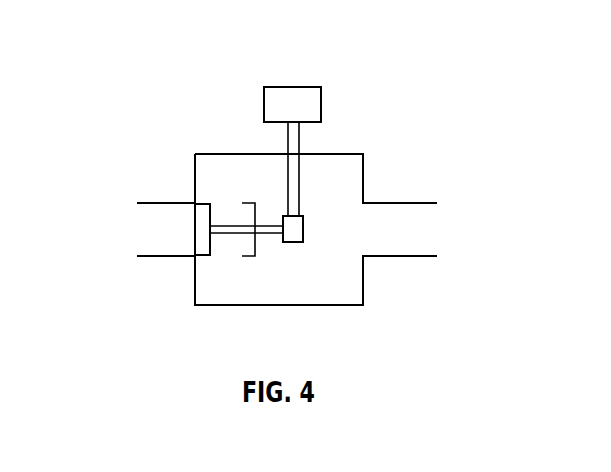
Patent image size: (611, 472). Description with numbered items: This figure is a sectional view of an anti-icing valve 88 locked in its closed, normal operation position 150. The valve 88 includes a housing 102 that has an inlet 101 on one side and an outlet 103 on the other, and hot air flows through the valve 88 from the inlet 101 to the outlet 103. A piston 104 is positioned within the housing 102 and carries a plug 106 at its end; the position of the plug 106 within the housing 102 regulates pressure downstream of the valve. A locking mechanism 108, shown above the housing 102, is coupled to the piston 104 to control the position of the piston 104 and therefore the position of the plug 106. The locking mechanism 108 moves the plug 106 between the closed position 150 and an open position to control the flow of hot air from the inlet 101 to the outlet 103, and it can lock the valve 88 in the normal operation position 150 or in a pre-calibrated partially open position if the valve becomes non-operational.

The anti-icing valve 88 is at (198, 105).
The inlet 101 is at (171, 220).
The housing 102 is at (364, 170).
The outlet 103 is at (403, 223).
The piston 104 is at (261, 237).
The plug 106 is at (195, 240).
The locking mechanism 108 is at (301, 95).
The normal operation position 150 is at (470, 89).